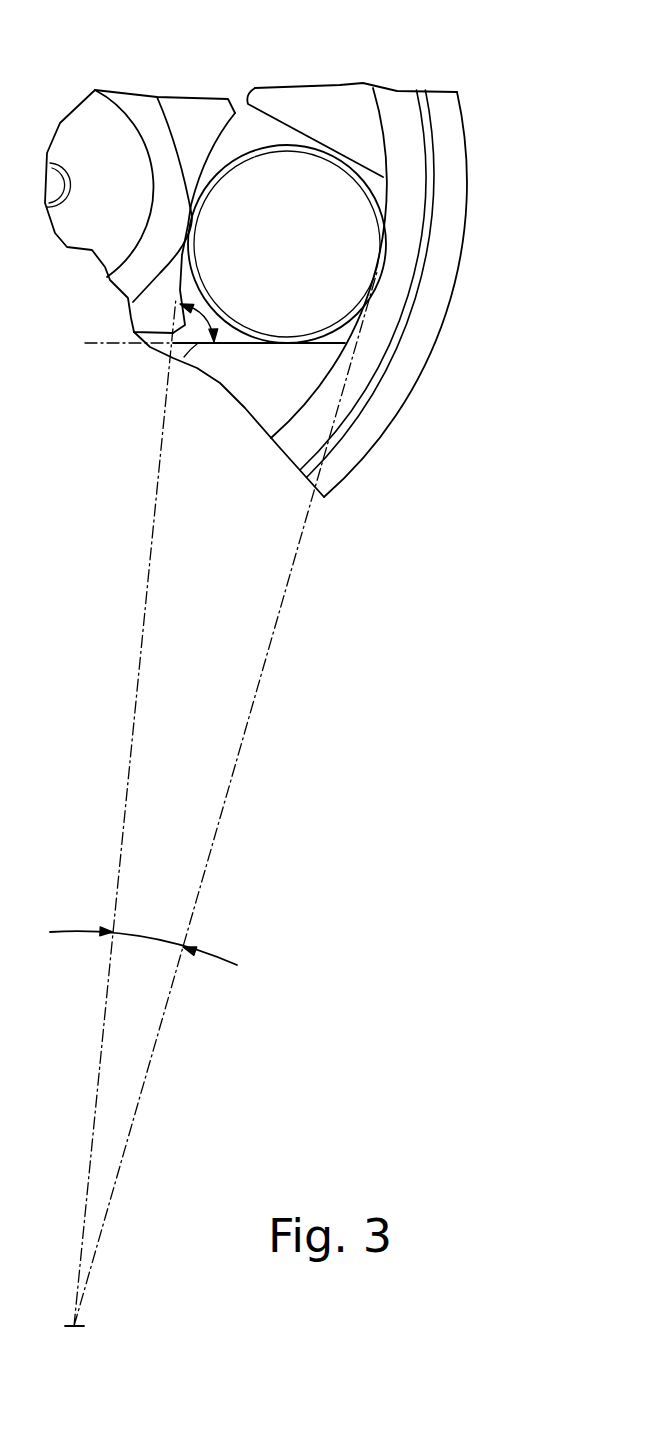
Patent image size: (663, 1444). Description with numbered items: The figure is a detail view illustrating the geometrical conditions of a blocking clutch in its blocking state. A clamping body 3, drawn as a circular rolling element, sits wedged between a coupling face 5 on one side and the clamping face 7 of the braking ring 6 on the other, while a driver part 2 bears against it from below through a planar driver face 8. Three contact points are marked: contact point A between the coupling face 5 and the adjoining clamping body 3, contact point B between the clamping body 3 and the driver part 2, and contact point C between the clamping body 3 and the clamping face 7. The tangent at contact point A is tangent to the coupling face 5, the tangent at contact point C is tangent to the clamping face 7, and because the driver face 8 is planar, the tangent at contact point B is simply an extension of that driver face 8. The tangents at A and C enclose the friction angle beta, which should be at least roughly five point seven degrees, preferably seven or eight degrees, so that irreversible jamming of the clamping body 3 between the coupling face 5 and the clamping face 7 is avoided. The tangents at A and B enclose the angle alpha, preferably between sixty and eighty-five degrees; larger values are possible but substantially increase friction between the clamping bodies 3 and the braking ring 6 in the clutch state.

The driver part 2 is at (318, 110).
The clamping body 3 is at (280, 263).
The coupling face 5 is at (214, 137).
The braking ring 6 is at (405, 130).
The clamping face 7 is at (379, 121).
The driver face 8 is at (345, 338).
The contact point A is at (186, 219).
The contact point B is at (278, 350).
The contact point C is at (378, 276).